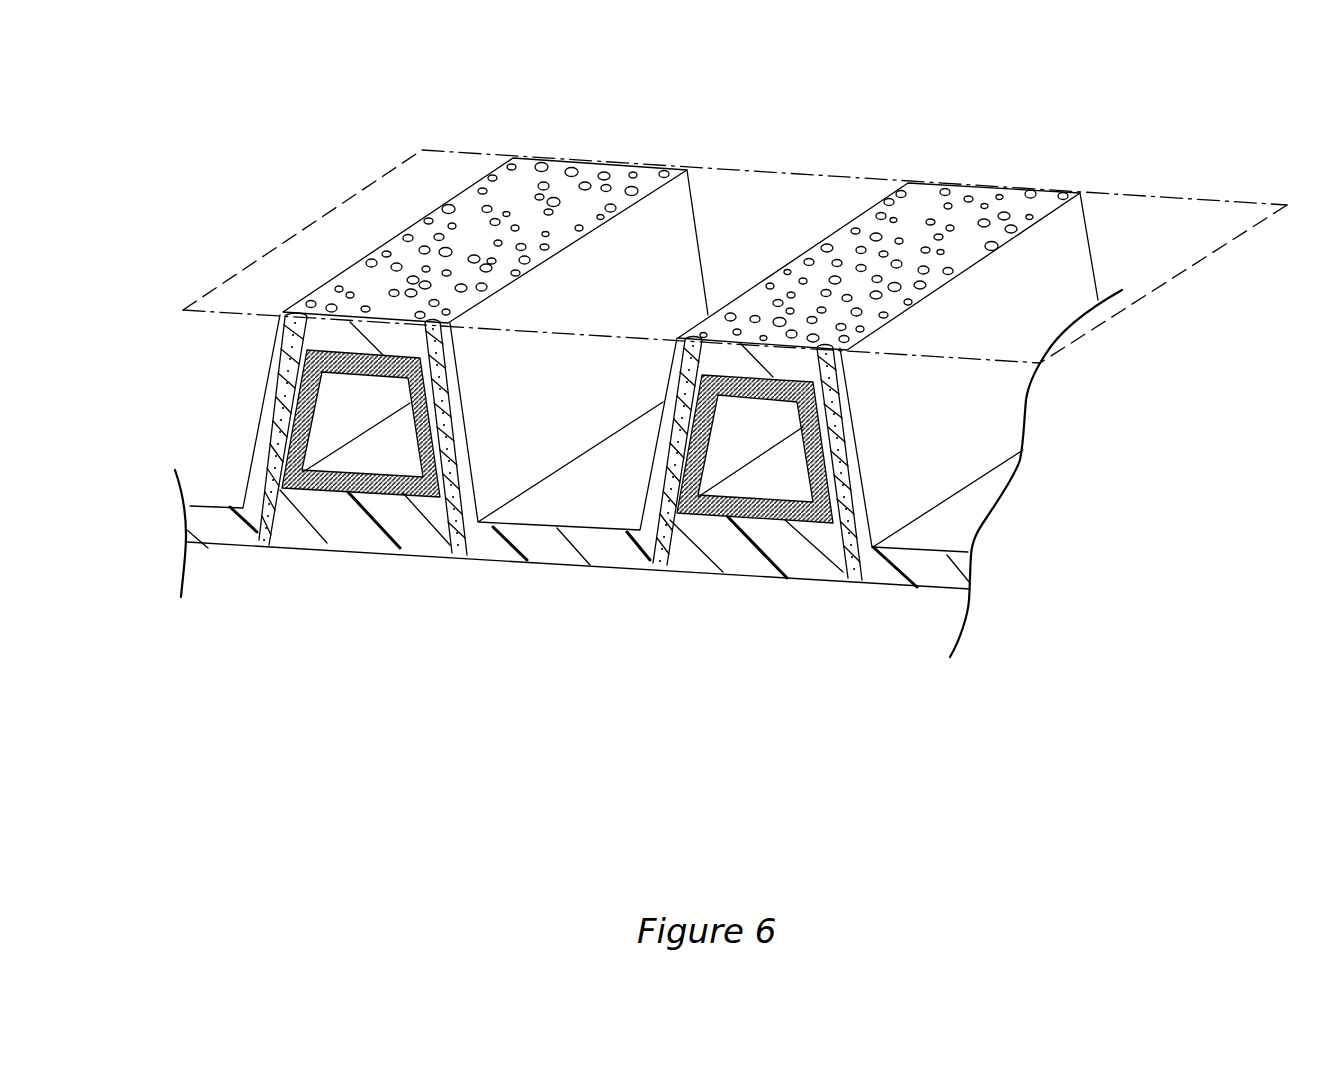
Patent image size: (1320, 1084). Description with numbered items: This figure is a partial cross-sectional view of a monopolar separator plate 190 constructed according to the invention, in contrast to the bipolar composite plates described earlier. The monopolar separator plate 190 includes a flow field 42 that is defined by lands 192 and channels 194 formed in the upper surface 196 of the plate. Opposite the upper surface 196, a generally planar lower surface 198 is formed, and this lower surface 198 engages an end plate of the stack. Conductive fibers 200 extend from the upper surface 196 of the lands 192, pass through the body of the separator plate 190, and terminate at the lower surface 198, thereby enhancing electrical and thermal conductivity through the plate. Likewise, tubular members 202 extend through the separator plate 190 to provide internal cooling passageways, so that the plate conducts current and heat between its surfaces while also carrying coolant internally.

The flow field 42 is at (1078, 140).
The monopolar separator plate 190 is at (283, 213).
The lands 192 is at (675, 218).
The channels 194 is at (232, 421).
The upper surface 196 is at (1202, 217).
The lower surface 198 is at (541, 565).
The conductive fibers 200 is at (260, 547).
The tubular members 202 is at (345, 490).